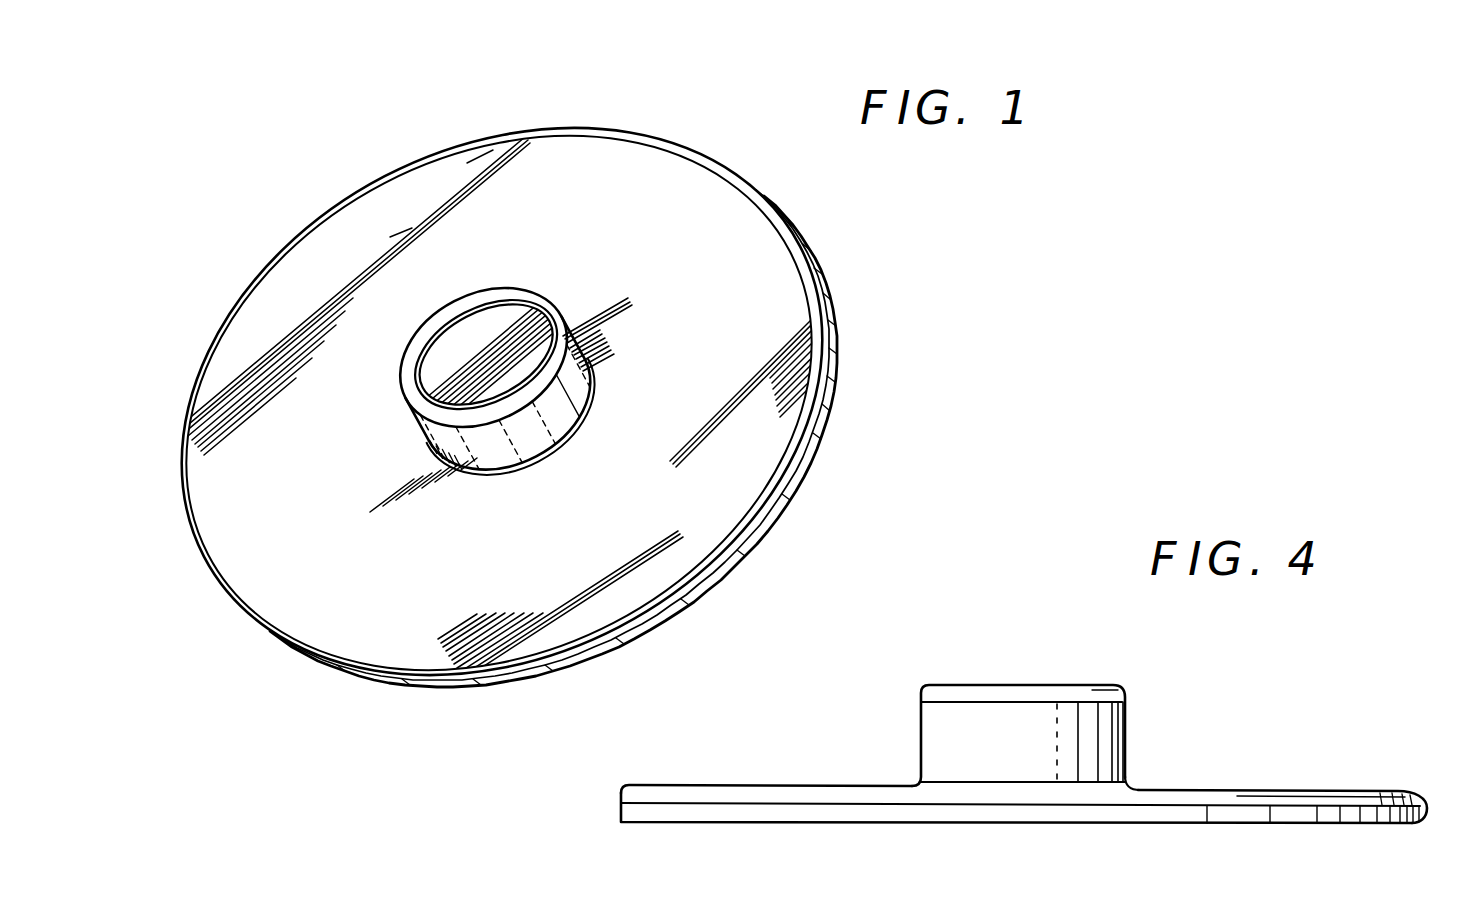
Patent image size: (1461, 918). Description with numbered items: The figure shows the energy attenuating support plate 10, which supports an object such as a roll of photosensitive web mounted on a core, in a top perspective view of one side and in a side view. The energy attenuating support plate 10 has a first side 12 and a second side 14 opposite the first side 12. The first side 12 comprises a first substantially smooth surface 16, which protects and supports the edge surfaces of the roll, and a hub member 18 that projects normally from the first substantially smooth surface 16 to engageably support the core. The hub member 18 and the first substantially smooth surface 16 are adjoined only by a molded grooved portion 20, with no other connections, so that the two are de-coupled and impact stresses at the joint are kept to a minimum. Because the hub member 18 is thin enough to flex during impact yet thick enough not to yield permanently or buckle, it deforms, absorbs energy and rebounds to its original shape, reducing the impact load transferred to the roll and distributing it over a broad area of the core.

In FIG. 1, the energy attenuating support plate 10 is at (150, 446).
In FIG. 4, the energy attenuating support plate 10 is at (806, 852).
In FIG. 1, the first side 12 is at (664, 500).
In FIG. 4, the first side 12 is at (1373, 792).
In FIG. 4, the second side 14 is at (1325, 826).
In FIG. 1, the first substantially smooth surface 16 is at (456, 556).
In FIG. 4, the first substantially smooth surface 16 is at (1293, 790).
In FIG. 1, the hub member 18 is at (562, 403).
In FIG. 4, the hub member 18 is at (941, 722).
In FIG. 1, the molded grooved portion 20 is at (413, 427).
In FIG. 4, the molded grooved portion 20 is at (1133, 786).